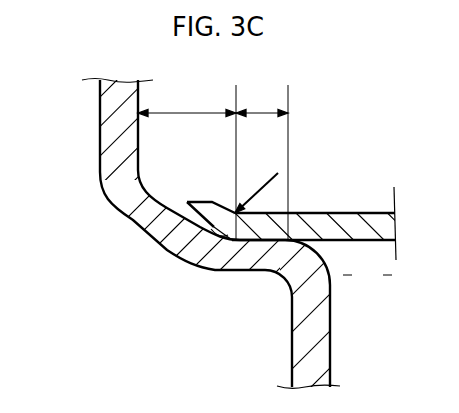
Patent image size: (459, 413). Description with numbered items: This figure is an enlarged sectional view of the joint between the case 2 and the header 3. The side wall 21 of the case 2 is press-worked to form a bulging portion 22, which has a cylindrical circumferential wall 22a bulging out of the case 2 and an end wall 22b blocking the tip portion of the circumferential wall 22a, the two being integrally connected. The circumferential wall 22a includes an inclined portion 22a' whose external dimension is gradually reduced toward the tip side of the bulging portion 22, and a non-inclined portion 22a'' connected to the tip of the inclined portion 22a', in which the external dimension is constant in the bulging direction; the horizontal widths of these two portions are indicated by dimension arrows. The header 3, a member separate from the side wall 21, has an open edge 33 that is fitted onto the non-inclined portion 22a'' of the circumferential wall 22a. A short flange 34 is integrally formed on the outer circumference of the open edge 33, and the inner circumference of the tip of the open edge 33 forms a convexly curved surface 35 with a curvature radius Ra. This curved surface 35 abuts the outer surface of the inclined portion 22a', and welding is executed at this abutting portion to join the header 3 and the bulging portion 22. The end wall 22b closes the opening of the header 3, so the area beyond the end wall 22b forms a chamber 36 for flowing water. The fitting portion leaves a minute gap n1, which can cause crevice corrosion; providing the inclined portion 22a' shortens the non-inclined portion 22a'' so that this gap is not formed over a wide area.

The case 2 is at (229, 206).
The side wall 21 is at (113, 107).
The bulging portion 22 is at (328, 314).
The circumferential wall 22a is at (189, 183).
The inclined portion 22a' is at (187, 162).
The non-inclined portion 22a'' is at (262, 162).
The end wall 22b is at (323, 353).
The header 3 is at (301, 235).
The open edge 33 is at (190, 242).
The flange 34 is at (211, 222).
The convexly curved surface 35 is at (231, 236).
The chamber 36 is at (367, 275).
The minute gap n1 is at (247, 241).
The curvature radius Ra is at (256, 188).